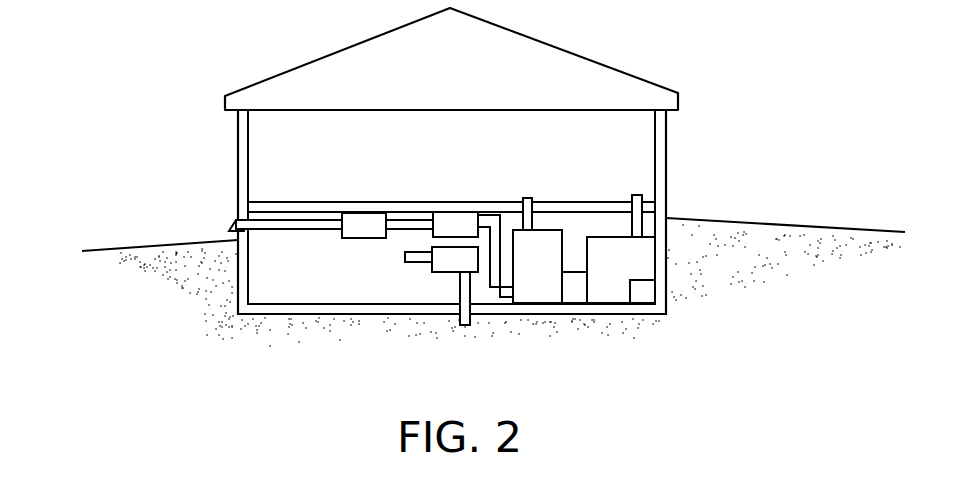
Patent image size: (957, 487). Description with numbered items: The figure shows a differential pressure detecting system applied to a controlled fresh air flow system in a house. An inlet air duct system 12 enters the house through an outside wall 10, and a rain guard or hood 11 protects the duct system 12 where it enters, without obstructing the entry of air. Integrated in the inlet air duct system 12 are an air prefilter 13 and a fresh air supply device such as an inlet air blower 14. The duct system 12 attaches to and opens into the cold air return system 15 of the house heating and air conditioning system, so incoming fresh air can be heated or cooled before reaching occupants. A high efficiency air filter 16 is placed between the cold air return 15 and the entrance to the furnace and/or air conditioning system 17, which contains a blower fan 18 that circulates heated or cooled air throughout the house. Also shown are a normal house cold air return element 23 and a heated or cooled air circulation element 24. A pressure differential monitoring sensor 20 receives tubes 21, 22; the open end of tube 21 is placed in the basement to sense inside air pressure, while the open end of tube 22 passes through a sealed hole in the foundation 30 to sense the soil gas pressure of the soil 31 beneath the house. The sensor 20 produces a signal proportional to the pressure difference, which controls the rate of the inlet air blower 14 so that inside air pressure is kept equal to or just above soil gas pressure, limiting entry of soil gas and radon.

The outside wall 10 is at (292, 198).
The rain guard or hood 11 is at (230, 215).
The inlet air duct system 12 is at (285, 232).
The air prefilter 13 is at (364, 228).
The inlet air blower 14 is at (473, 254).
The cold air return system 15 is at (537, 266).
The air filter 16 is at (574, 288).
The furnace and/or air conditioning system 17 is at (621, 270).
The blower fan 18 is at (642, 292).
The pressure differential monitoring sensor 20 is at (455, 262).
The tube 21 is at (410, 266).
The tube 22 is at (455, 327).
The cold air return system element 23 is at (524, 194).
The heated or cooled air circulation element 24 is at (632, 189).
The foundation 30 is at (668, 299).
The soil beneath the house 31 is at (450, 331).